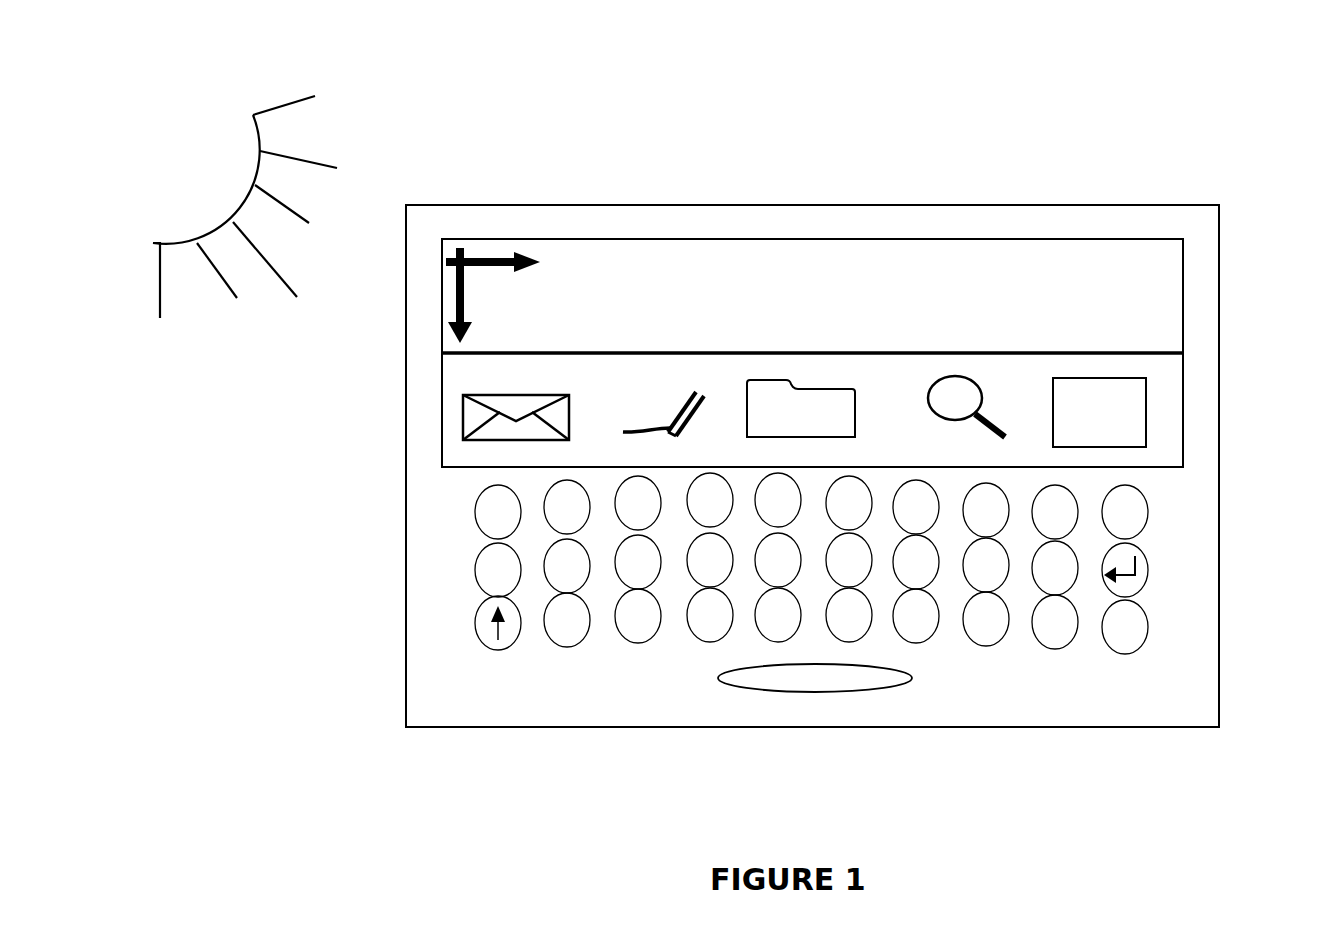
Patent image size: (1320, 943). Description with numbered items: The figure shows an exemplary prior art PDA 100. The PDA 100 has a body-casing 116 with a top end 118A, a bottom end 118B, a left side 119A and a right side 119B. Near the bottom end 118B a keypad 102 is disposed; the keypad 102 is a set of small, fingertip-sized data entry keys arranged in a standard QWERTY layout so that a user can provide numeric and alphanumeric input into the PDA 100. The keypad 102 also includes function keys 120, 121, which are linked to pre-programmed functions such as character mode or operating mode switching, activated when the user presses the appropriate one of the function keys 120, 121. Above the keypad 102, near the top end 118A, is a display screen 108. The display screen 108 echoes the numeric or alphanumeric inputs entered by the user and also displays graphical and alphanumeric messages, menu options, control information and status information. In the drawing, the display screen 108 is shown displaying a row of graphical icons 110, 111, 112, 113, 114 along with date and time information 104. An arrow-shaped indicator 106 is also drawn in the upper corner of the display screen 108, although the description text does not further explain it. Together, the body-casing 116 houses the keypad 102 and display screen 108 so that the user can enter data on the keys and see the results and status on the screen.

The PDA 100 is at (834, 66).
The keypad 102 is at (1155, 487).
The date and time information 104 is at (1152, 242).
The scroll arrow indicator 106 is at (473, 257).
The display screen 108 is at (715, 258).
The graphical icon 110 is at (520, 395).
The graphical icon 111 is at (625, 428).
The graphical icon 112 is at (801, 408).
The graphical icon 113 is at (933, 389).
The graphical icon 114 is at (1053, 406).
The body-casing 116 is at (577, 222).
The top end 118A is at (890, 204).
The bottom end 118B is at (930, 727).
The left side 119A is at (406, 480).
The right side 119B is at (1218, 450).
The function key 120 is at (1055, 650).
The function key 121 is at (1128, 652).